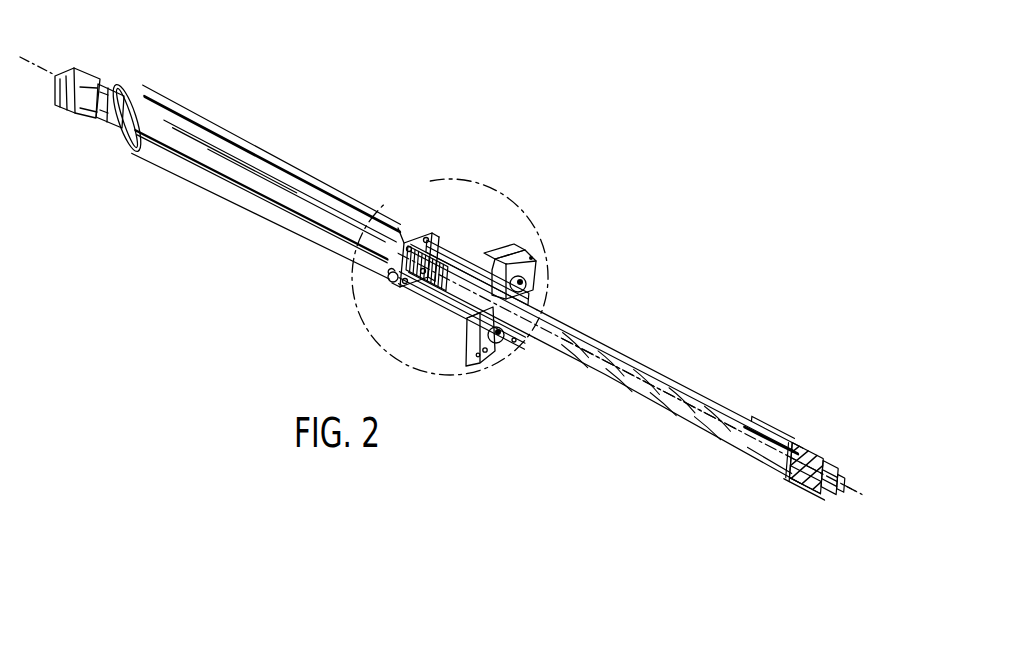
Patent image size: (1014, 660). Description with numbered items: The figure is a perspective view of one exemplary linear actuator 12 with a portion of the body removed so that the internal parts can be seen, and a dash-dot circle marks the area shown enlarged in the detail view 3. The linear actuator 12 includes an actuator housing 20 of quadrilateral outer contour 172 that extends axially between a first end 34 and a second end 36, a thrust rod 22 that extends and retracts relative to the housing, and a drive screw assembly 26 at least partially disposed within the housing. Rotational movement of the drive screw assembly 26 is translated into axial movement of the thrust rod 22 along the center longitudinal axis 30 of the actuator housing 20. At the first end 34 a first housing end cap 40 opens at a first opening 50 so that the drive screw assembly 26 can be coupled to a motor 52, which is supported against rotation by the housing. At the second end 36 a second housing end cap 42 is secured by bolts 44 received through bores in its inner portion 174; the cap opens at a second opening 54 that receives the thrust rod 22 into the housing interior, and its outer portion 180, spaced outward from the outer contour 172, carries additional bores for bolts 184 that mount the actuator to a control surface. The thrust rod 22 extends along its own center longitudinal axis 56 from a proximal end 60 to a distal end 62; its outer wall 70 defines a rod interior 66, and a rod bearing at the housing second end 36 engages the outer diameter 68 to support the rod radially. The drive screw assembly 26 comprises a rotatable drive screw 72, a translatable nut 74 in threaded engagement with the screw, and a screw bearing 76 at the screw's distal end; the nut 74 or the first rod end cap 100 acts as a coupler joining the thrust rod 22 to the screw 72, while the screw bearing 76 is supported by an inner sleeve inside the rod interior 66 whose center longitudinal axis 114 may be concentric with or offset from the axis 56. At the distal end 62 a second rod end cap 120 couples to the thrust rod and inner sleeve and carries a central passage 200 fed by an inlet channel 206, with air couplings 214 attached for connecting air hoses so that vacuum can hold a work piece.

The linear actuator 12 is at (685, 128).
The actuator housing 20 is at (317, 175).
The thrust rod 22 is at (647, 363).
The drive screw assembly 26 is at (407, 288).
The center longitudinal axis 30 is at (70, 66).
The first end 34 is at (190, 90).
The second end 36 is at (557, 304).
The first housing end cap 40 is at (138, 90).
The second housing end cap 42 is at (467, 352).
The bolts 44 is at (498, 341).
The first opening 50 is at (106, 141).
The motor 52 is at (92, 80).
The second opening 54 is at (537, 287).
The center longitudinal axis 56 is at (836, 484).
The proximal end 60 is at (425, 305).
The distal end 62 is at (782, 496).
The rod interior 66 is at (690, 408).
The outer diameter 68 is at (672, 383).
The outer wall 70 is at (727, 407).
The rotatable drive screw 72 is at (448, 243).
The translatable nut 74 is at (424, 240).
The screw bearing 76 is at (463, 263).
The first rod end cap 100 is at (440, 248).
The center longitudinal axis 114 is at (852, 494).
The second rod end cap 120 is at (813, 452).
The outer contour 172 is at (370, 272).
The inner portion 174 is at (515, 342).
The outer portion 180 is at (494, 363).
The bolts 184 is at (480, 367).
The central passage 200 is at (800, 487).
The inlet channel 206 is at (827, 460).
The air couplings 214 is at (808, 450).
The detail view circle 3 is at (430, 181).